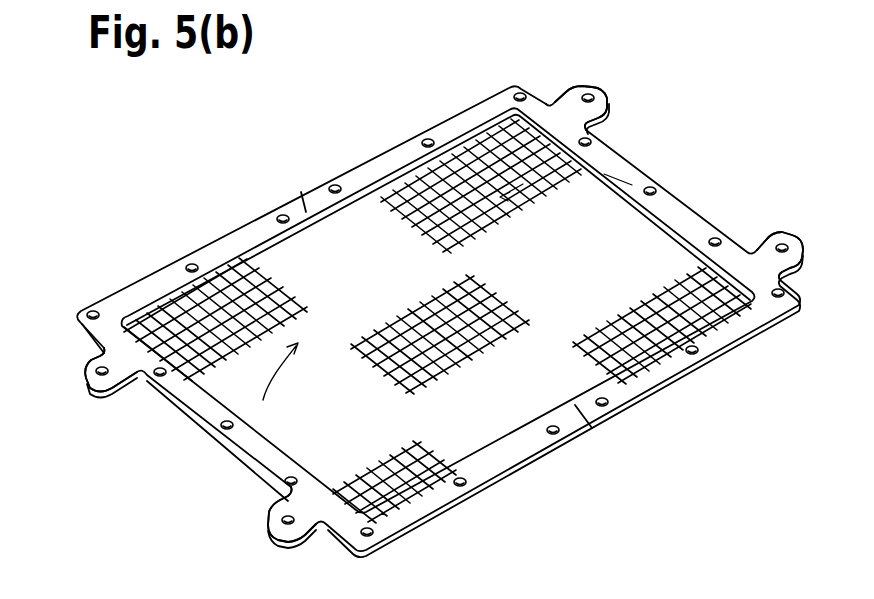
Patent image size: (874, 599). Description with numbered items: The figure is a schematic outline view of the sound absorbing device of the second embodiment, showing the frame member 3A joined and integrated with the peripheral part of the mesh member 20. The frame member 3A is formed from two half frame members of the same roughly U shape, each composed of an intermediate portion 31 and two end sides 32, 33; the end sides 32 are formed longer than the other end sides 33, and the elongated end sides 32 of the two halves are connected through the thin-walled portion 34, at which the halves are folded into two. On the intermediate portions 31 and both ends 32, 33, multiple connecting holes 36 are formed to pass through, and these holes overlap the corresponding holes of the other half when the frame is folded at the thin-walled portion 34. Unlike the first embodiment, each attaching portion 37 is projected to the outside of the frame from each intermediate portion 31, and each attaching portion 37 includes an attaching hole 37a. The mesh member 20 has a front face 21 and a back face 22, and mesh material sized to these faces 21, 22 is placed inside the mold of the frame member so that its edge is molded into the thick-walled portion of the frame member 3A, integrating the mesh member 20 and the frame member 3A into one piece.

The frame member 3A is at (640, 157).
The mesh member 20 is at (246, 76).
The front face 21 is at (237, 267).
The back face 22 is at (397, 187).
The intermediate portion 31 is at (680, 212).
The end side 32 is at (455, 127).
The end side 33 is at (438, 494).
The thin-walled portion 34 is at (592, 428).
The connecting hole 36 is at (718, 243).
The attaching portion 37 is at (572, 103).
The attaching hole 37a is at (592, 100).